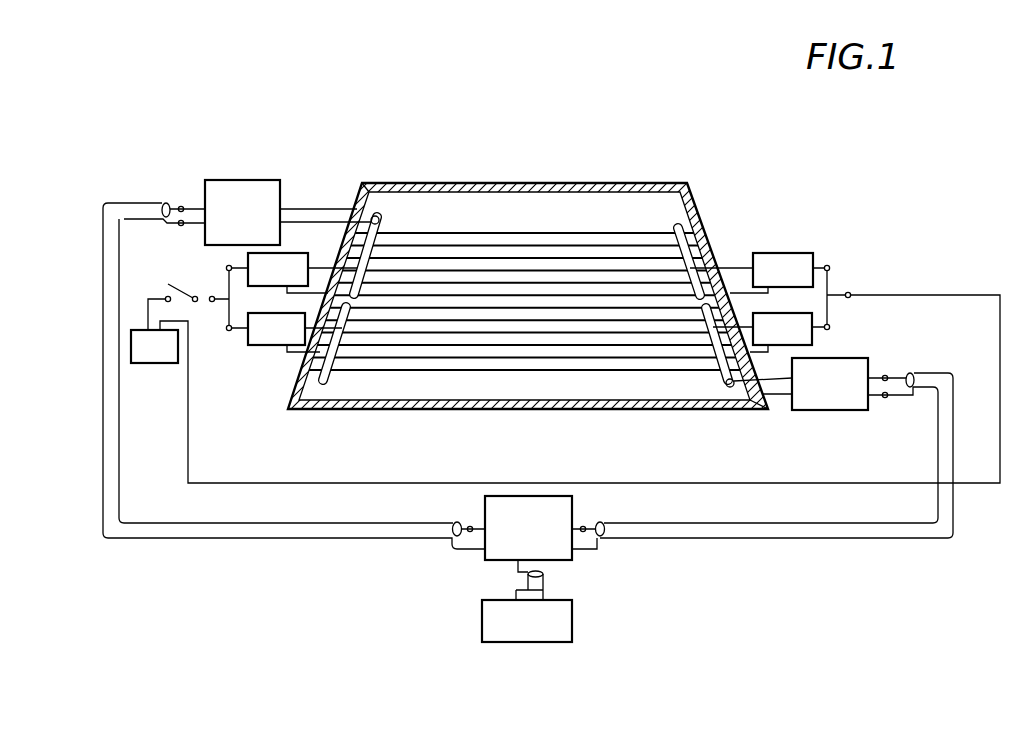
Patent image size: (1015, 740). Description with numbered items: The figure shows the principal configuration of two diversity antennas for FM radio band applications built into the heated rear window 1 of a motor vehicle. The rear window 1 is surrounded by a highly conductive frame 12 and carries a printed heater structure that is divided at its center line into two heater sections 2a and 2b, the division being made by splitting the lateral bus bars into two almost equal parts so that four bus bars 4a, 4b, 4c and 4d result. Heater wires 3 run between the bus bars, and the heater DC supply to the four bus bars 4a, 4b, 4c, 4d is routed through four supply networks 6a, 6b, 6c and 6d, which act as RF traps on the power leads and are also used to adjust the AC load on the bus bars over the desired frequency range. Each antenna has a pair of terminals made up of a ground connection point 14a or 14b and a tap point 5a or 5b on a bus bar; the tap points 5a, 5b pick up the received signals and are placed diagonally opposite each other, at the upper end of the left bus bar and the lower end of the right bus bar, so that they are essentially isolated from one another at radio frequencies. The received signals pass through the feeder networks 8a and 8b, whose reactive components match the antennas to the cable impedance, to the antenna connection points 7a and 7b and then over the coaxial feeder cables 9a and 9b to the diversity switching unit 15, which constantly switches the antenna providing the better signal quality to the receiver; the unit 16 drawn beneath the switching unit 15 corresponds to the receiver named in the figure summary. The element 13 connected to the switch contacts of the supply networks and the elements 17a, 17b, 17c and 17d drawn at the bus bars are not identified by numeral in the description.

The rear window 1 is at (691, 397).
The highly conductive frame 12 is at (689, 197).
The ground connection point 14a is at (750, 398).
The ground connection point 14b is at (358, 200).
The heater section 2a is at (522, 276).
The heater section 2b is at (567, 340).
The heater wires 3 is at (480, 365).
The bus bar 4a is at (363, 249).
The bus bar 4b is at (328, 381).
The bus bar 4c is at (718, 348).
The bus bar 4d is at (682, 242).
The tap point 5a is at (726, 383).
The tap point 5b is at (380, 220).
The supply network 6a is at (292, 282).
The supply network 6b is at (290, 342).
The supply network 6c is at (796, 282).
The supply network 6d is at (796, 342).
The antenna connection point 7a is at (885, 375).
The antenna connection point 7b is at (181, 205).
The feeder network 8a is at (845, 398).
The feeder network 8b is at (257, 226).
The coaxial feeder cable 9a is at (935, 380).
The coaxial feeder cable 9b is at (153, 208).
The switch control 13 is at (166, 360).
The diversity switching unit 15 is at (541, 542).
The display unit 16 is at (540, 636).
The electrode lead 17a is at (357, 268).
The electrode lead 17b is at (345, 323).
The electrode lead 17c is at (688, 266).
The electrode lead 17d is at (710, 326).